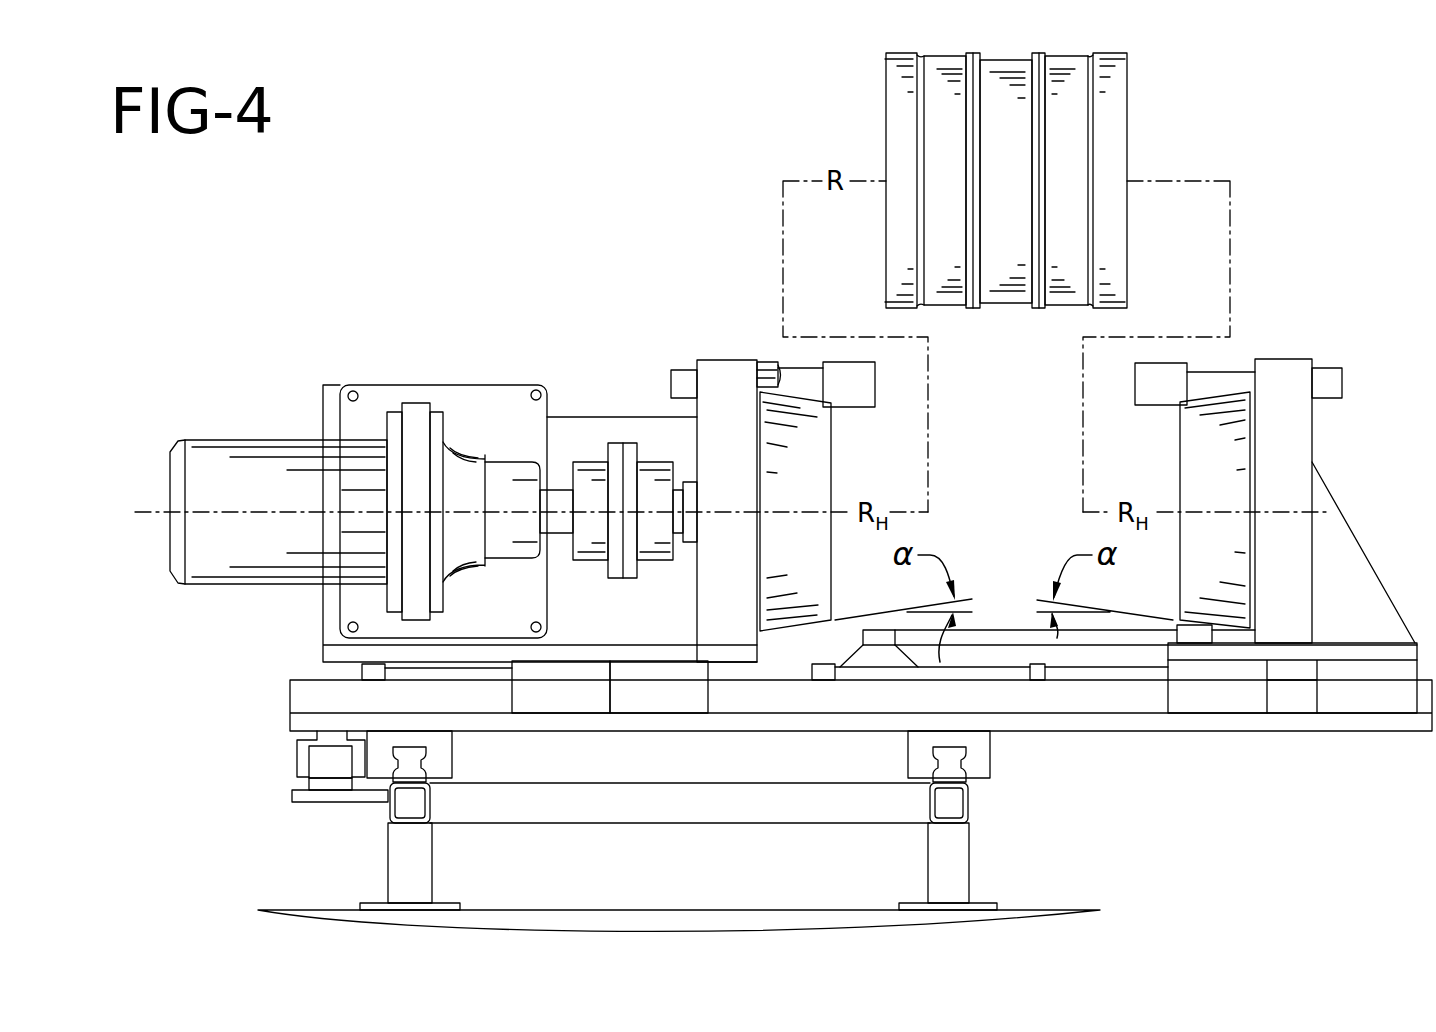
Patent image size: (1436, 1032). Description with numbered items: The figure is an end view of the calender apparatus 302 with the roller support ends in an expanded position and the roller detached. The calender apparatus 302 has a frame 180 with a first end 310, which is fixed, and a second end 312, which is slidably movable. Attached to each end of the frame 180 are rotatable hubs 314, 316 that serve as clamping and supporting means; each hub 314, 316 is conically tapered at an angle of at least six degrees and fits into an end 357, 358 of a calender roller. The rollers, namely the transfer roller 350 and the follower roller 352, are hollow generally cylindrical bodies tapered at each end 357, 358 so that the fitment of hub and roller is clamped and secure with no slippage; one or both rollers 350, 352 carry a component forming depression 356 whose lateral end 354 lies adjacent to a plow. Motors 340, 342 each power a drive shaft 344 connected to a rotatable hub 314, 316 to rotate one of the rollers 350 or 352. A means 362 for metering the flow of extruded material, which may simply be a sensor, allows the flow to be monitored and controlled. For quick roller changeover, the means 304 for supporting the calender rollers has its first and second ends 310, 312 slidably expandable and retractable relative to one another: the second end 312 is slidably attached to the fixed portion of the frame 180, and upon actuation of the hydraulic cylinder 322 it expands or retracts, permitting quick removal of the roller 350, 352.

The frame 180 is at (946, 868).
The calender apparatus 302 is at (335, 365).
The means for supporting the calender rollers 304 is at (1276, 466).
The first end 310 is at (713, 387).
The second end 312 is at (1286, 385).
The rotatable hub 314 is at (803, 452).
The rotatable hub 316 is at (1205, 450).
The hydraulic cylinder 322 is at (372, 672).
The motor 340 is at (347, 495).
The motor 342 is at (275, 475).
The drive shaft 344 is at (623, 443).
The transfer roller 350 is at (1034, 180).
The follower roller 352 is at (1034, 180).
The lateral end 354 is at (920, 233).
The component forming depression 356 is at (942, 142).
The roller end 357 is at (886, 84).
The roller end 358 is at (1127, 115).
The means for metering 362 is at (768, 368).